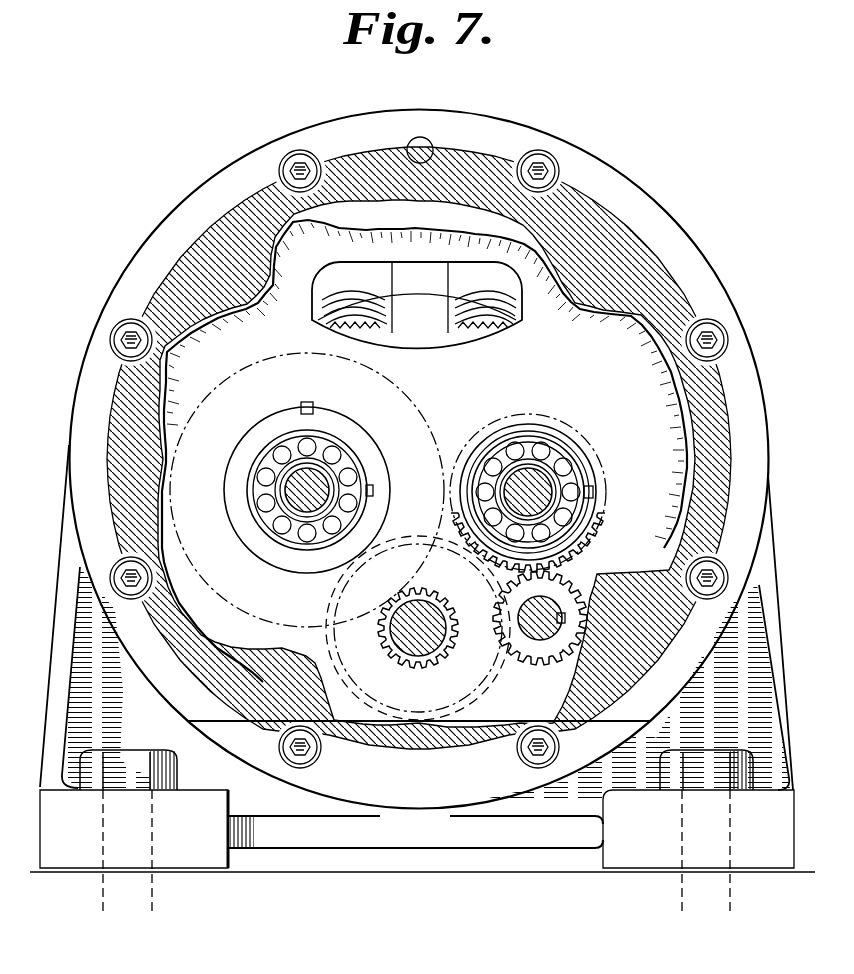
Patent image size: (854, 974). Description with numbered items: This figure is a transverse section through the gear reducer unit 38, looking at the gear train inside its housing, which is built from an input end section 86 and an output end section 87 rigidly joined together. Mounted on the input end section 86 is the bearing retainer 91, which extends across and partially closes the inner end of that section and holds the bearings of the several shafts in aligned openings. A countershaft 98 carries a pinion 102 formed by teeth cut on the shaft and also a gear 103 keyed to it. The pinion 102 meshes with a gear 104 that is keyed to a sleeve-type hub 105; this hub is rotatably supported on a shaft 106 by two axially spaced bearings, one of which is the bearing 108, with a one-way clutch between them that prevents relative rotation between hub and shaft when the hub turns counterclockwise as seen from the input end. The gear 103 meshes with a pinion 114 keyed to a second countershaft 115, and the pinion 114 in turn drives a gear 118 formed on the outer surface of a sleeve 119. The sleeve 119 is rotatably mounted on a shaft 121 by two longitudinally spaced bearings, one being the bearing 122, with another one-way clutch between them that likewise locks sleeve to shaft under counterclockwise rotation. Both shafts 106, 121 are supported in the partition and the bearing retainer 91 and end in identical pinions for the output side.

The gear reducer unit 38 is at (666, 203).
The input end section 86 is at (680, 292).
The output end section 87 is at (776, 568).
The bearing retainer 91 is at (418, 357).
The countershaft 98 is at (443, 627).
The pinion 102 is at (413, 667).
The gear 103 is at (504, 672).
The gear 104 is at (424, 404).
The sleeve-type hub 105 is at (334, 414).
The shaft 106 is at (303, 510).
The bearing 108 is at (253, 493).
The pinion 114 is at (565, 625).
The countershaft 115 is at (538, 640).
The gear 118 is at (588, 548).
The sleeve 119 is at (597, 520).
The shaft 121 is at (550, 480).
The bearing 122 is at (586, 500).